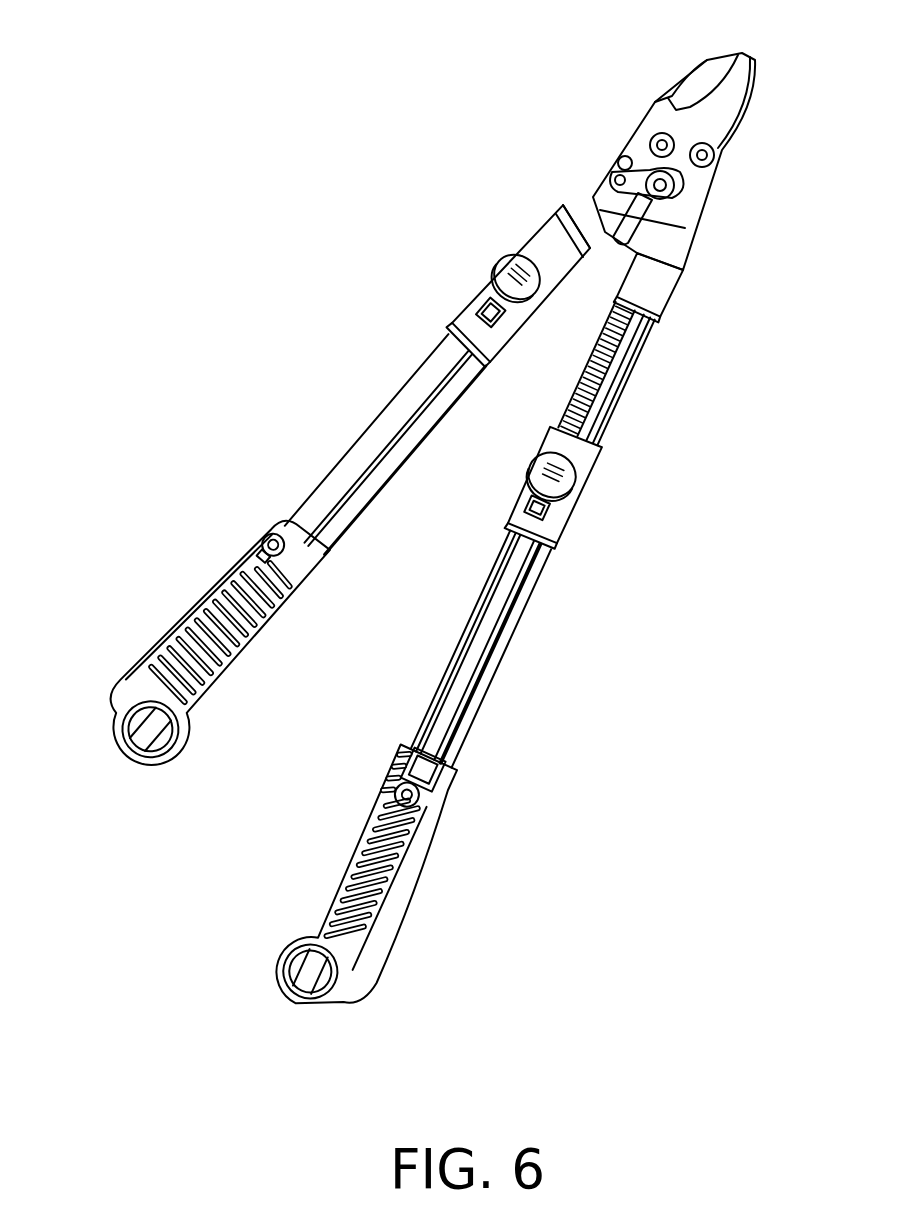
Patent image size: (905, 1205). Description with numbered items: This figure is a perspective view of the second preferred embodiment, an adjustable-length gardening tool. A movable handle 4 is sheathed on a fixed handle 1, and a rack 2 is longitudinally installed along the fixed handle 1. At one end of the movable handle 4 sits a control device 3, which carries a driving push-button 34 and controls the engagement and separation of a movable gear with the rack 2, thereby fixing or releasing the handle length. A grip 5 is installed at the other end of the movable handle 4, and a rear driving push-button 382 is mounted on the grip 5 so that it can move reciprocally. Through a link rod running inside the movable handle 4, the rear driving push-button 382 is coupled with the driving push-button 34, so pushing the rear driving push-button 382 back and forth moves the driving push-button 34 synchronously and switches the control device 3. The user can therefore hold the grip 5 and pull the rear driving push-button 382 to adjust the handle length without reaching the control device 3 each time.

The fixed handle 1 is at (635, 345).
The rack 2 is at (615, 405).
The control device 3 is at (485, 262).
The driving push-button 34 is at (577, 497).
The movable handle 4 is at (485, 612).
The grip 5 is at (353, 840).
The rear driving push-button 382 is at (273, 540).